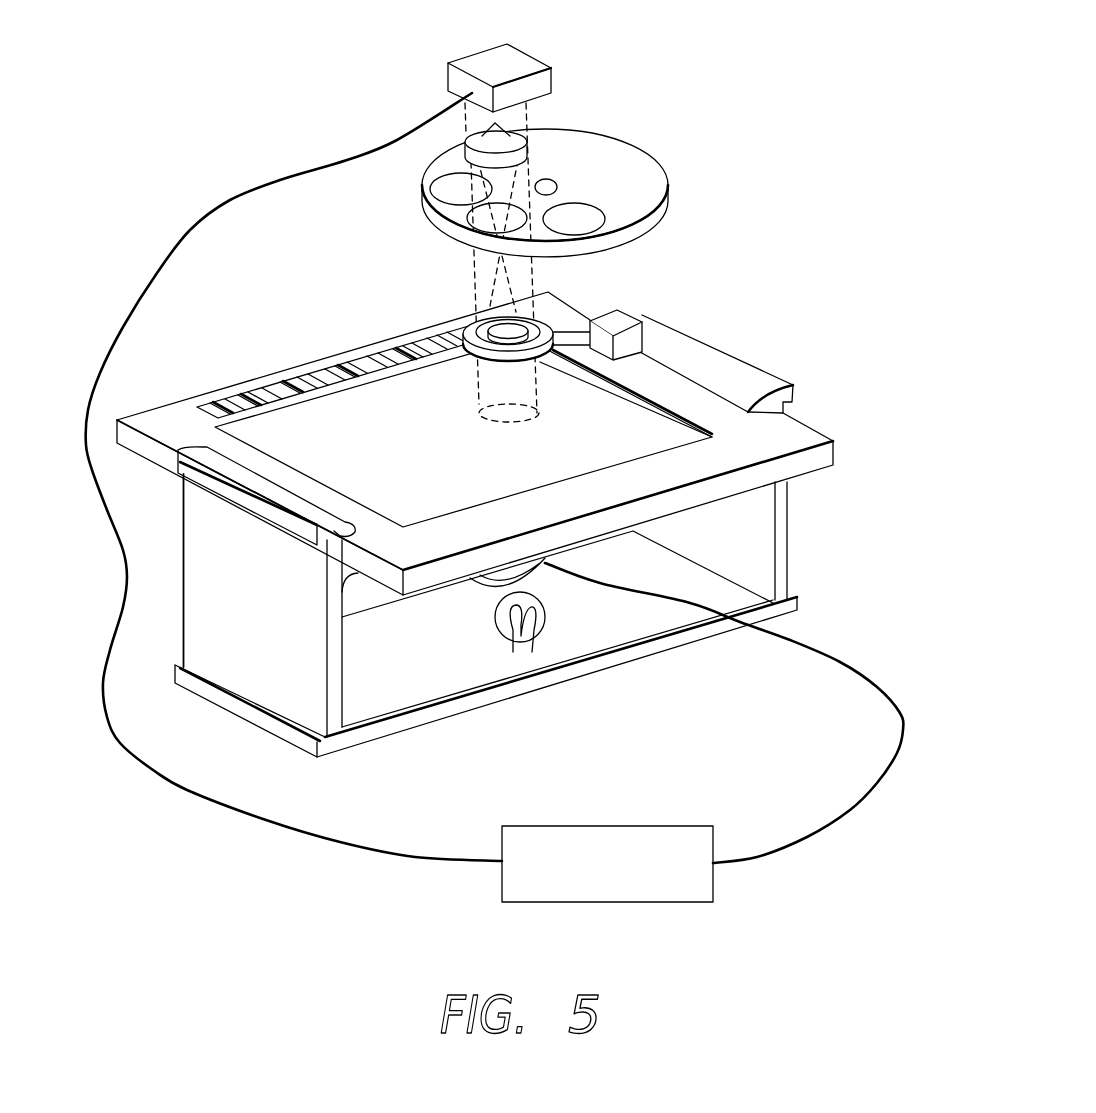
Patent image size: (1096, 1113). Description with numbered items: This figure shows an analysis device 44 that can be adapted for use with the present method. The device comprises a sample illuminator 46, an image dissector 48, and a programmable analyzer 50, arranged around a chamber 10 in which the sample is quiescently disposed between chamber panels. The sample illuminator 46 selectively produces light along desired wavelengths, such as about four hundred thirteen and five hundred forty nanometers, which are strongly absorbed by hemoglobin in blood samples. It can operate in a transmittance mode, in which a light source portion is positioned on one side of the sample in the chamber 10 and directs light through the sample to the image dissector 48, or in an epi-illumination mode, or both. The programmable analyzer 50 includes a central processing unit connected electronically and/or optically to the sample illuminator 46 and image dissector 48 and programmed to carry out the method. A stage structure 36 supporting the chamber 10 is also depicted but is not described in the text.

The chamber 10 is at (322, 424).
The stage table 36 is at (800, 420).
The analysis device 44 is at (782, 148).
The sample illuminator 46 is at (545, 632).
The image dissector 48 is at (551, 69).
The programmable analyzer 50 is at (713, 826).